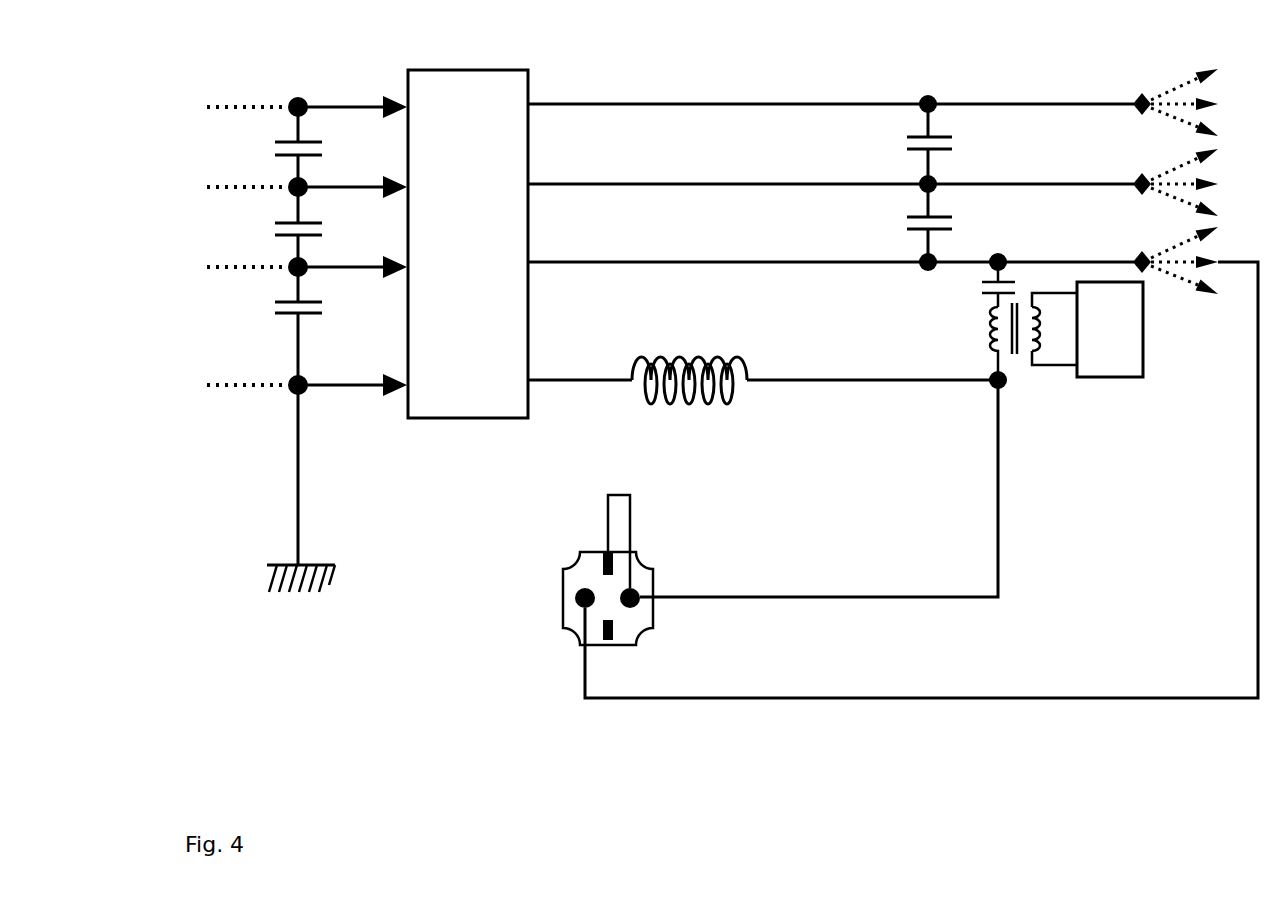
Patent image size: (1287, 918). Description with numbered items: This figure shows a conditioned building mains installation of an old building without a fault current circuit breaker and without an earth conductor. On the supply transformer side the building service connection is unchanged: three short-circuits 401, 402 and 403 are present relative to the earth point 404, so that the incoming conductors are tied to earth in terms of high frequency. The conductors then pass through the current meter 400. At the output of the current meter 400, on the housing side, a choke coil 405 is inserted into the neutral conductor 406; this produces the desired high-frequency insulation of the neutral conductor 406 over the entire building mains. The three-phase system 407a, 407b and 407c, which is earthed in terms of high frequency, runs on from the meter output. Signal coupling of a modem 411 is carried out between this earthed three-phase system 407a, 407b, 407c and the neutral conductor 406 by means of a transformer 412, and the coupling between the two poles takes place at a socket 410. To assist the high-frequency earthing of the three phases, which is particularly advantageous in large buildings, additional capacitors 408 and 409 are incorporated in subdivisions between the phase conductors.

The current meter 400 is at (515, 92).
The short-circuit 401 is at (275, 148).
The short-circuit 402 is at (275, 228).
The short-circuit 403 is at (275, 306).
The earth point 404 is at (298, 508).
The choke coil 405 is at (680, 357).
The neutral conductor 406 is at (805, 380).
The three-phase system phase 407a is at (697, 104).
The three-phase system phase 407b is at (697, 184).
The three-phase system phase 407c is at (697, 262).
The additional capacitor 408 is at (953, 140).
The additional capacitor 409 is at (953, 222).
The socket 410 is at (585, 575).
The modem 411 is at (1145, 328).
The transformer 412 is at (1017, 355).